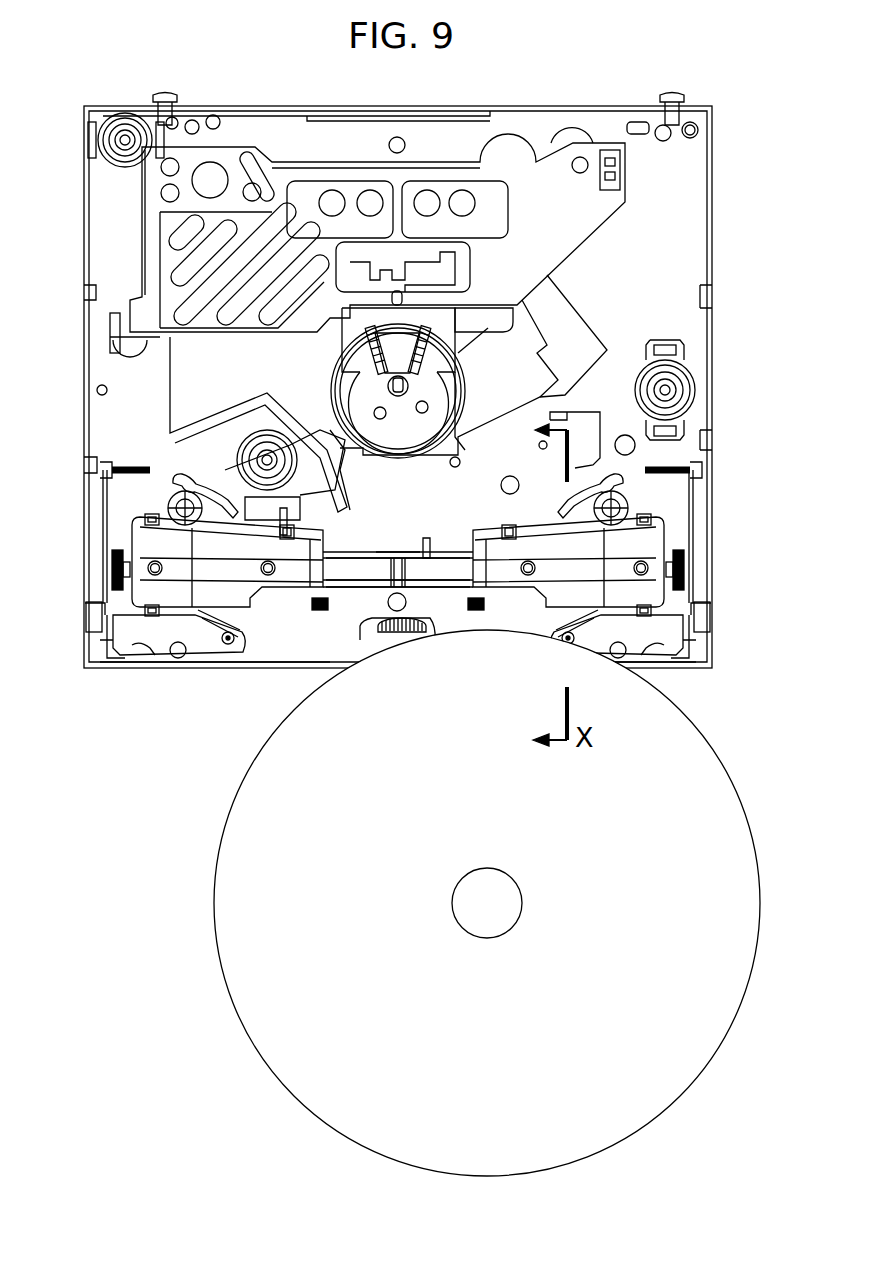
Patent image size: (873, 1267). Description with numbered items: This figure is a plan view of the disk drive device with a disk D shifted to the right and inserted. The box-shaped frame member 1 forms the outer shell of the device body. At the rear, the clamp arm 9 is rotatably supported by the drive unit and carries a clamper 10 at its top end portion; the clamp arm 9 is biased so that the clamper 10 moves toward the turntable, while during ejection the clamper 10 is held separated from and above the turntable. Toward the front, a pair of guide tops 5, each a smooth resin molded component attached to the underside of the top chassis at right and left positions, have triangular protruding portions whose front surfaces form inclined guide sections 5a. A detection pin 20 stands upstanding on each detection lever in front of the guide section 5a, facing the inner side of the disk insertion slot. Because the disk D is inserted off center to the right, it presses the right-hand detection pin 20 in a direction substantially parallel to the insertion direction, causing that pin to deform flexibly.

The frame member 1 is at (717, 105).
The clamp arm 9 is at (150, 228).
The clamper 10 is at (336, 385).
The guide top 5 is at (160, 545).
The guide section 5a is at (212, 622).
The detection pin 20 is at (228, 645).
The disk D is at (220, 972).